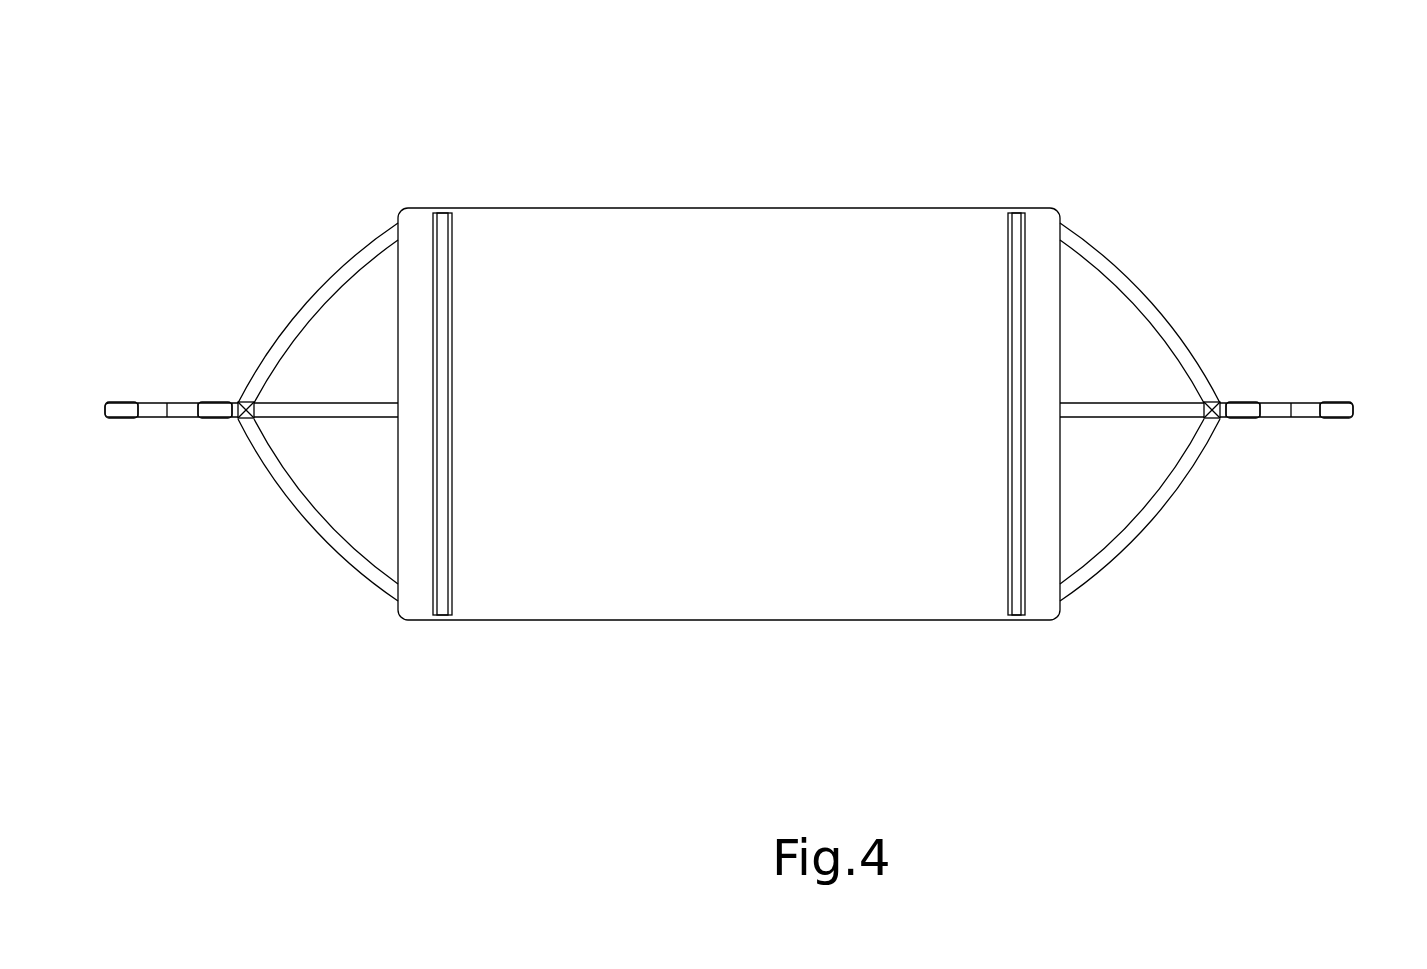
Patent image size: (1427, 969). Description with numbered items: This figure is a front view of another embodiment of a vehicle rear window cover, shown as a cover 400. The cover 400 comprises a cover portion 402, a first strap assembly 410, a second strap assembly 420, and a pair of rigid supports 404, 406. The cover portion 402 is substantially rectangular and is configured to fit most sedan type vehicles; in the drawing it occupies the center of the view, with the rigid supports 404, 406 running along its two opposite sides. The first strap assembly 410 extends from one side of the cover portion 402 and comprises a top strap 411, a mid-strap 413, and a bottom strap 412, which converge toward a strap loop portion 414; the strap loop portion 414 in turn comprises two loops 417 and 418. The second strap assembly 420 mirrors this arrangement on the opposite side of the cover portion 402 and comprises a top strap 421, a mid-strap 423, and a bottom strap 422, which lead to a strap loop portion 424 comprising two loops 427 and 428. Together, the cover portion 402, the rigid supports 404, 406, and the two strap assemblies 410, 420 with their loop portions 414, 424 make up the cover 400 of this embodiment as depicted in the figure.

The cover 400 is at (735, 369).
The cover portion 402 is at (729, 379).
The rigid support 404 is at (396, 459).
The rigid support 406 is at (1065, 453).
The first strap assembly 410 is at (228, 411).
The top strap 411 is at (316, 303).
The bottom strap 412 is at (262, 510).
The mid-strap 413 is at (302, 537).
The strap loop portion 414 is at (148, 397).
The loop 417 is at (113, 438).
The loop 418 is at (206, 438).
The second strap assembly 420 is at (1236, 421).
The top strap 421 is at (1140, 291).
The bottom strap 422 is at (1190, 510).
The mid-strap 423 is at (1178, 534).
The strap loop portion 424 is at (1316, 405).
The loop 427 is at (1343, 437).
The loop 428 is at (1251, 439).